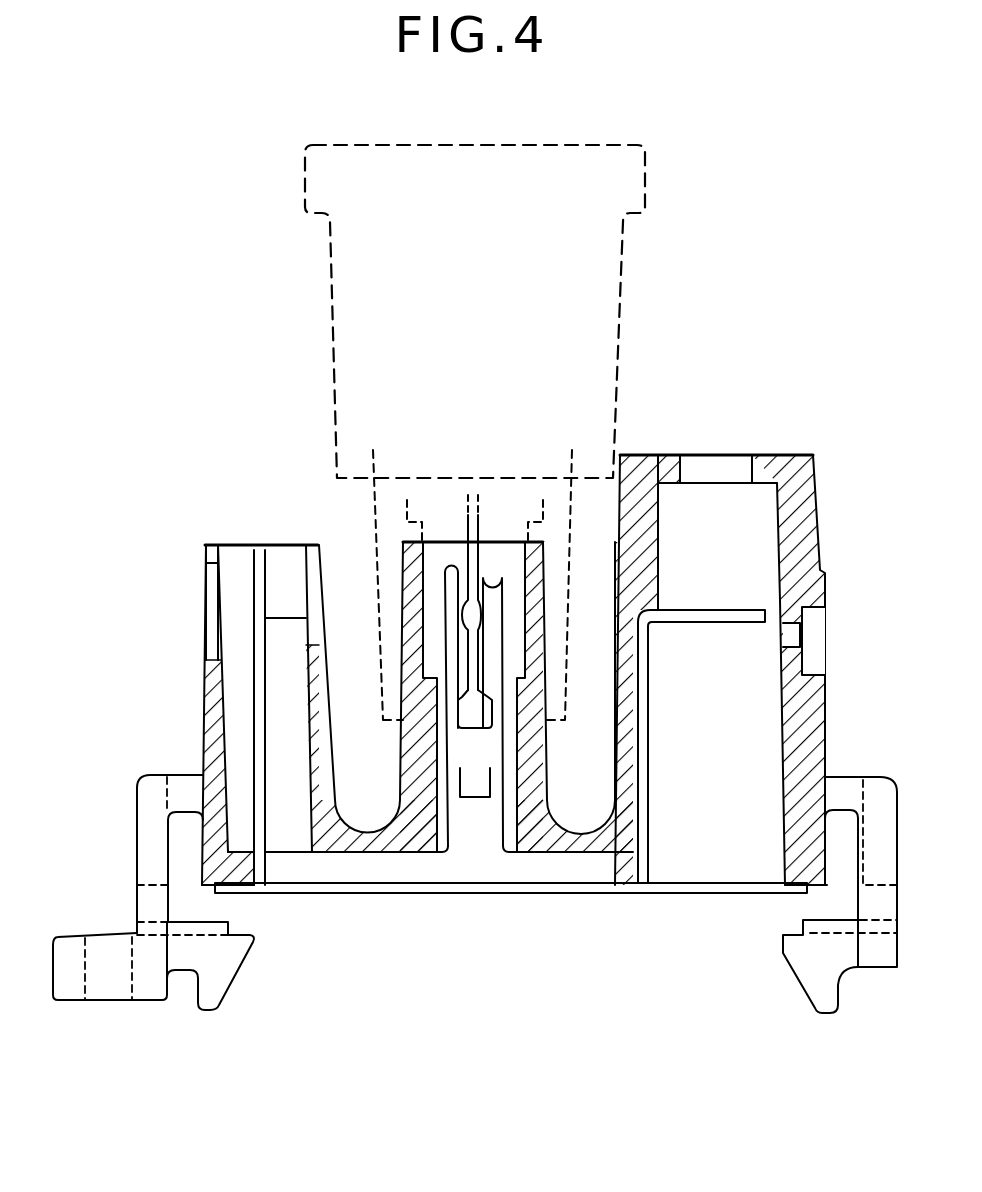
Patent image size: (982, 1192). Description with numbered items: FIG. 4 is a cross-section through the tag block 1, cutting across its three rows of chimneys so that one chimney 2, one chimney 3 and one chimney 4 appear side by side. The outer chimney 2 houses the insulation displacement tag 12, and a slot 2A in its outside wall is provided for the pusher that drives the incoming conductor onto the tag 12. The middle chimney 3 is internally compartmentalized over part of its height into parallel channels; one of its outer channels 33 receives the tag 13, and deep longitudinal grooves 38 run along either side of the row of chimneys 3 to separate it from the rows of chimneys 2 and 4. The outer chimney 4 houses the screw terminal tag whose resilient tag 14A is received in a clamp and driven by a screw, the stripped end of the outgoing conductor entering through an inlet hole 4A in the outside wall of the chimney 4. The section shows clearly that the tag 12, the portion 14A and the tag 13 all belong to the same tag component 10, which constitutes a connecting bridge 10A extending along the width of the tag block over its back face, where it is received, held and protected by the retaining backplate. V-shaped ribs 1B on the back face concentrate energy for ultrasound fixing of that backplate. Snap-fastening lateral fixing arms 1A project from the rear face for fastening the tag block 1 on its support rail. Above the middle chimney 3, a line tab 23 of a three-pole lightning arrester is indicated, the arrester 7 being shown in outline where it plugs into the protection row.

The tag block 1 is at (203, 738).
The lateral fixing arm 1A is at (146, 854).
The V-shaped rib 1B is at (442, 895).
The chimney 2 is at (215, 690).
The slot 2A is at (212, 594).
The chimney 3 is at (418, 745).
The chimney 4 is at (780, 478).
The inlet hole 4A is at (813, 630).
The mating plug 7 is at (618, 358).
The tag component 10 is at (525, 866).
The connecting bridge 10A is at (362, 870).
The insulation displacement tag 12 is at (257, 603).
The tag 13 is at (462, 748).
The resilient tag 14A is at (703, 618).
The line tab 23 is at (466, 528).
The outer channel 33 is at (508, 787).
The longitudinal groove 38 is at (350, 602).